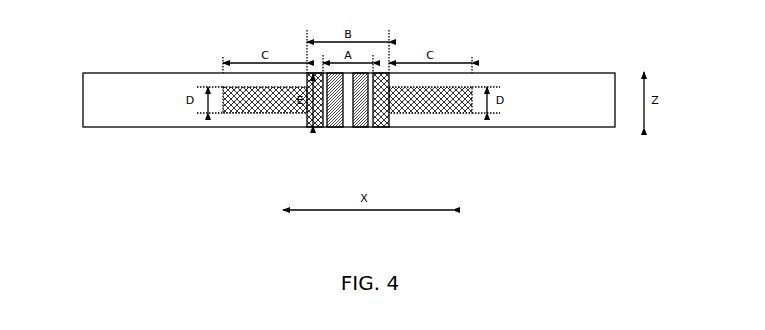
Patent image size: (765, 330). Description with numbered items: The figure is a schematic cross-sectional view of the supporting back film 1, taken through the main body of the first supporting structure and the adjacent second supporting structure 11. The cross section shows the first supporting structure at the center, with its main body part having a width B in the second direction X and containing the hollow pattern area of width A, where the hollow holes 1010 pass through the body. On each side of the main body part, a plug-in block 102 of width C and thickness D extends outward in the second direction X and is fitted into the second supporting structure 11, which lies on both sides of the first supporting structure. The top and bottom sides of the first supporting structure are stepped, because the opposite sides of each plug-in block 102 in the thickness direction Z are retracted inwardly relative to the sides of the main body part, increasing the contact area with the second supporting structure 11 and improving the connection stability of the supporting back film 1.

The supporting back film 1 is at (93, 32).
The second supporting structure 11 is at (137, 127).
The plug-in block 102 is at (267, 111).
The hollow hole 1010 is at (348, 118).